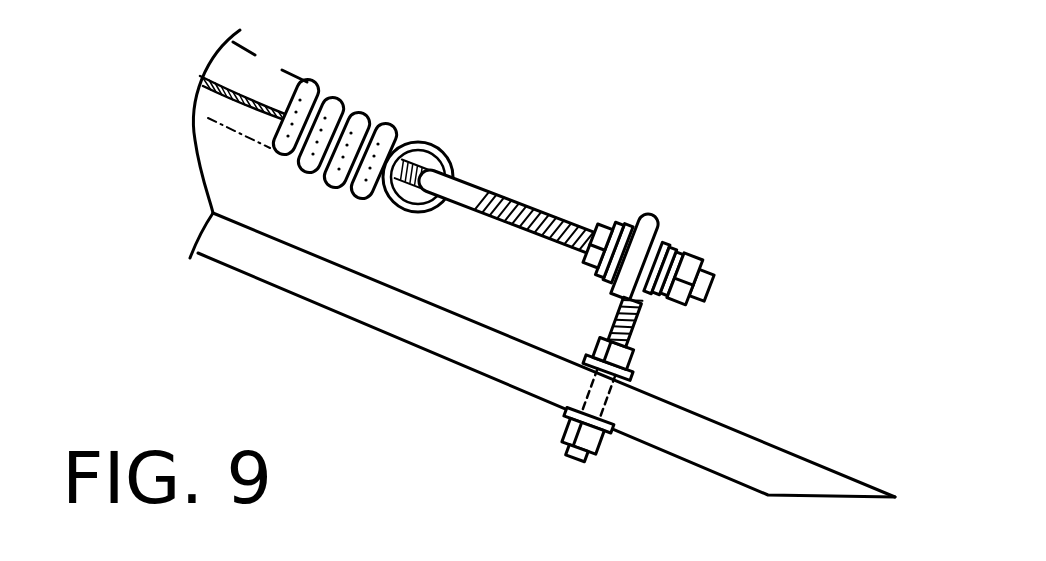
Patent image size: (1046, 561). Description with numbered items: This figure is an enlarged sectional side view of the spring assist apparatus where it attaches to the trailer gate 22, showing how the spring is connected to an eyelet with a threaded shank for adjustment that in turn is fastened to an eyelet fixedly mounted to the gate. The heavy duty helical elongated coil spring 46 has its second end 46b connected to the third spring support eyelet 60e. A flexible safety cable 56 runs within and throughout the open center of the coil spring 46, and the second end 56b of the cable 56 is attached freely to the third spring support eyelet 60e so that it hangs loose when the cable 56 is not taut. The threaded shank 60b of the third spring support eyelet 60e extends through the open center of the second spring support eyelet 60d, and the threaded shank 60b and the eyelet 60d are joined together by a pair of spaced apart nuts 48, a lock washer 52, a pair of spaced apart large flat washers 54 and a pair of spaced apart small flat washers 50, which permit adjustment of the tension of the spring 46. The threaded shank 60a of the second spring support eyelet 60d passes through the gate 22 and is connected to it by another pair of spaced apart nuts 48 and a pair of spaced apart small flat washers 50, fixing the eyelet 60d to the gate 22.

The gate 22 is at (325, 287).
The helical elongated coil spring 46 is at (313, 91).
The second end of the coil spring 46b is at (393, 202).
The nuts 48 is at (603, 238).
The small flat washers 50 is at (625, 230).
The lock washer 52 is at (676, 253).
The large flat washers 54 is at (640, 232).
The flexible safety cable 56 is at (217, 87).
The second end of the cable 56b is at (405, 165).
The threaded shank of second spring support eyelet 60a is at (638, 329).
The threaded shank of third spring support eyelet 60b is at (556, 212).
The second spring support eyelet 60d is at (658, 225).
The third spring support eyelet 60e is at (448, 190).